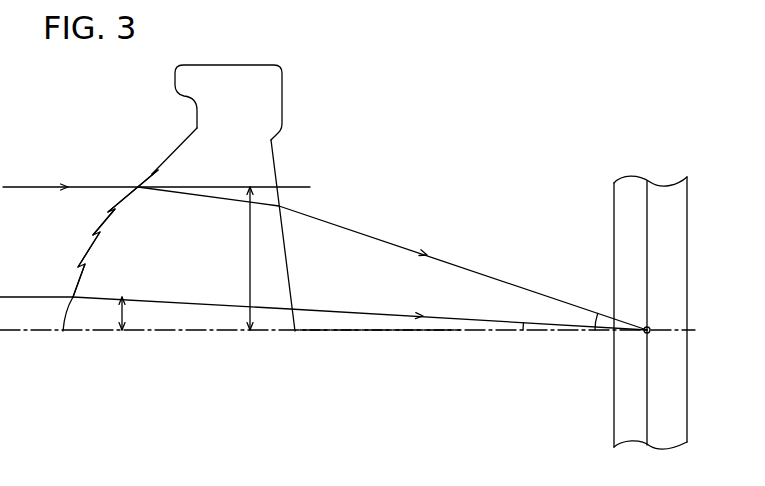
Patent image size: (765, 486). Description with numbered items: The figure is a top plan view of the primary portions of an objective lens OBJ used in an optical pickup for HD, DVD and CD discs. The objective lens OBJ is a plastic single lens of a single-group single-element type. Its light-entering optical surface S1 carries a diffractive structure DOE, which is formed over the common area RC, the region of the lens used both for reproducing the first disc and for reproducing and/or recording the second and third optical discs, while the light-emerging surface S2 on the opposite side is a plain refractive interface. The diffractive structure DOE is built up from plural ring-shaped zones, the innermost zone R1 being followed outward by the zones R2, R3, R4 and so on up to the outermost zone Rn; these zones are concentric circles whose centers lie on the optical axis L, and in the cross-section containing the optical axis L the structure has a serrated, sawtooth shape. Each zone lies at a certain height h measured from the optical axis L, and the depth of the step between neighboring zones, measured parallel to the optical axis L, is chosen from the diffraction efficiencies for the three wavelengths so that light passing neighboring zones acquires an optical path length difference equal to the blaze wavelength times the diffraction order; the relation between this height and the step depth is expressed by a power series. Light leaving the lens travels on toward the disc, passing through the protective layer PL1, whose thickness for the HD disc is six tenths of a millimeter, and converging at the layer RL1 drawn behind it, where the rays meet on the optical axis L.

The objective lens OBJ is at (268, 100).
The optical surface S1 is at (180, 142).
The light-emerging surface S2 is at (275, 165).
The diffractive structure DOE is at (104, 212).
The ring-shaped zone Rn is at (128, 199).
The ring-shaped zone R4 is at (112, 221).
The ring-shaped zone R3 is at (92, 252).
The ring-shaped zone R2 is at (80, 279).
The ring-shaped zone R1 is at (85, 342).
The common area RC is at (264, 258).
The height h is at (129, 313).
The optical axis L is at (387, 332).
The protective layer PL1 is at (628, 188).
The recording layer of optical disc RL1 is at (648, 207).